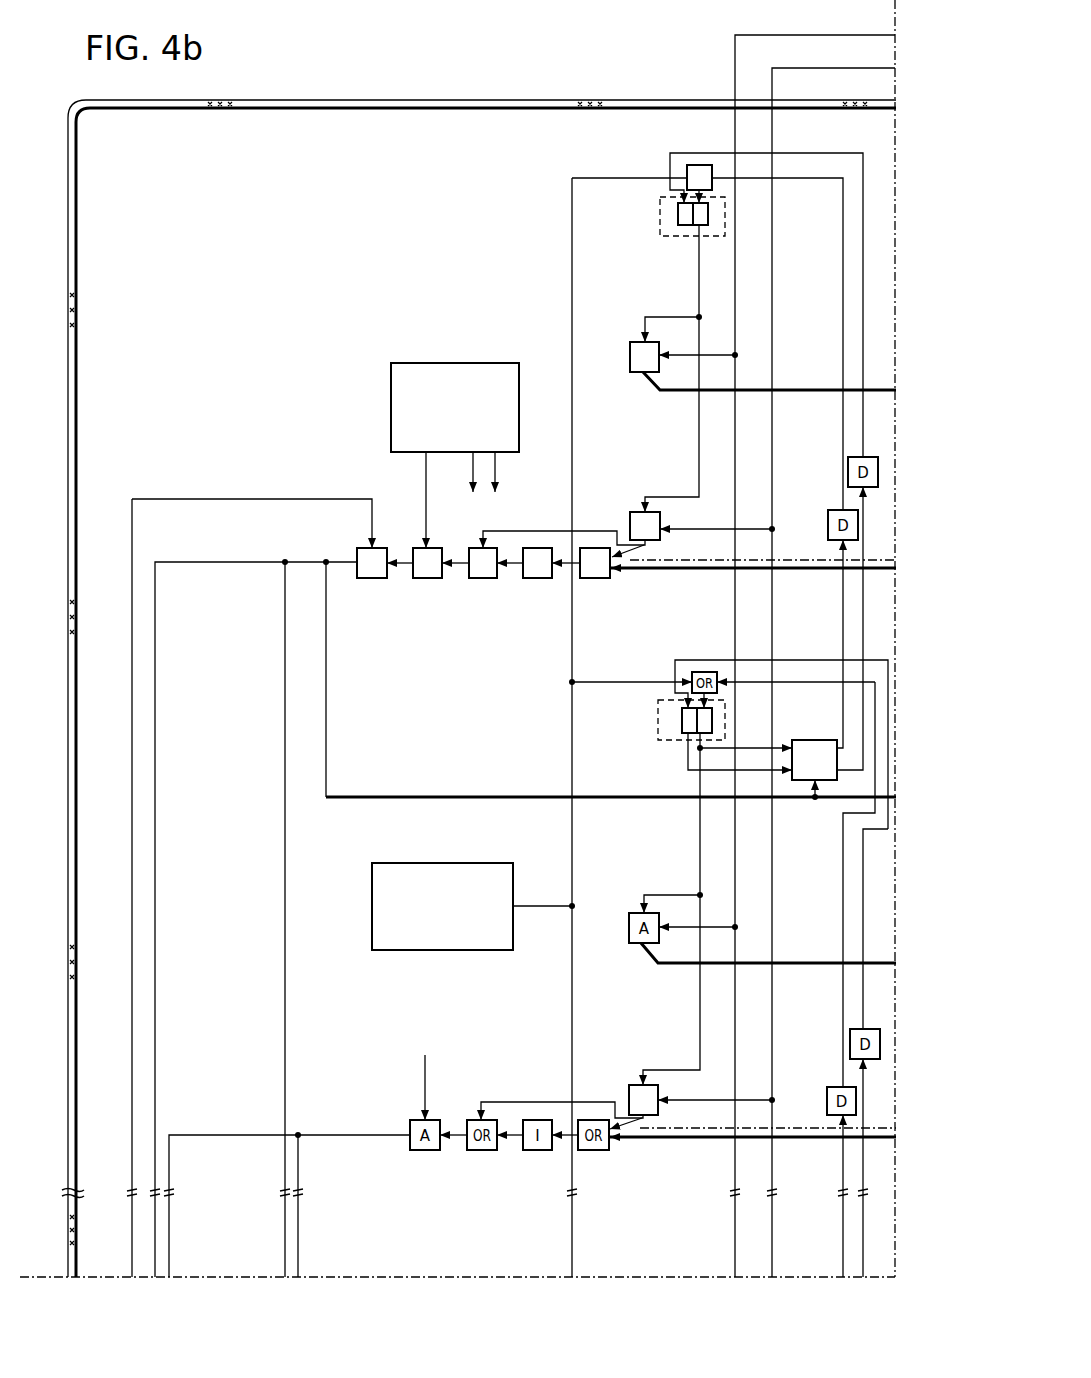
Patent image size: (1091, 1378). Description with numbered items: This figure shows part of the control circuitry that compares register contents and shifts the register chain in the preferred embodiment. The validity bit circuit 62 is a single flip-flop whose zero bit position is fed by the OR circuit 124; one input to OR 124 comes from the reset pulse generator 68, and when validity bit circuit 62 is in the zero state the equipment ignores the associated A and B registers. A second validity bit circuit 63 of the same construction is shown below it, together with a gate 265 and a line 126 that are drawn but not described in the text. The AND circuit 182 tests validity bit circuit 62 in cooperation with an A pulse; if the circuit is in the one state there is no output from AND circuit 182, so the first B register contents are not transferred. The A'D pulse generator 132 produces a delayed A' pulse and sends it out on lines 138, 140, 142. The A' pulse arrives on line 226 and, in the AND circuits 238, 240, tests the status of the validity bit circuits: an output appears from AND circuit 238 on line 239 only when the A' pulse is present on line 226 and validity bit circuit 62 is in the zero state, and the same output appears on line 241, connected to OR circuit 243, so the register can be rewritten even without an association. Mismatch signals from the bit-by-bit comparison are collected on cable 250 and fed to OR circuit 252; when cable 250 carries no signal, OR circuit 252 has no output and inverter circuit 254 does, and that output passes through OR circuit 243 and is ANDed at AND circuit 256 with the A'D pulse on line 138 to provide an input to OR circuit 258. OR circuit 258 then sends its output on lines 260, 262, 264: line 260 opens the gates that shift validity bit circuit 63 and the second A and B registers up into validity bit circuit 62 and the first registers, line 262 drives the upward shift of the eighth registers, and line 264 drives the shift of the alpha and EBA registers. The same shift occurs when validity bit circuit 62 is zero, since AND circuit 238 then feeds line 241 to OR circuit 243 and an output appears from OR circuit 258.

The OR circuit 124 is at (695, 165).
The validity bit circuit 62 is at (660, 219).
The AND circuit 182 is at (630, 350).
The pulse generator 132 is at (448, 363).
The line 138 is at (426, 480).
The line 140 is at (473, 481).
The line 142 is at (495, 481).
The AND circuit 238 is at (640, 512).
The line 241 is at (608, 530).
The line 239 is at (650, 547).
The line 226 is at (773, 462).
The cable 250 is at (797, 558).
The OR circuit 258 is at (372, 578).
The AND circuit 256 is at (428, 578).
The OR circuit 243 is at (483, 578).
The inverter circuit 254 is at (538, 578).
The OR circuit 252 is at (595, 578).
The line 264 is at (155, 640).
The line 262 is at (285, 641).
The line 260 is at (326, 679).
The line 126 is at (572, 655).
The validity bit circuit 63 is at (658, 723).
The gate 265 is at (828, 740).
The reset pulse generator 68 is at (441, 863).
The AND circuit 240 is at (629, 1095).